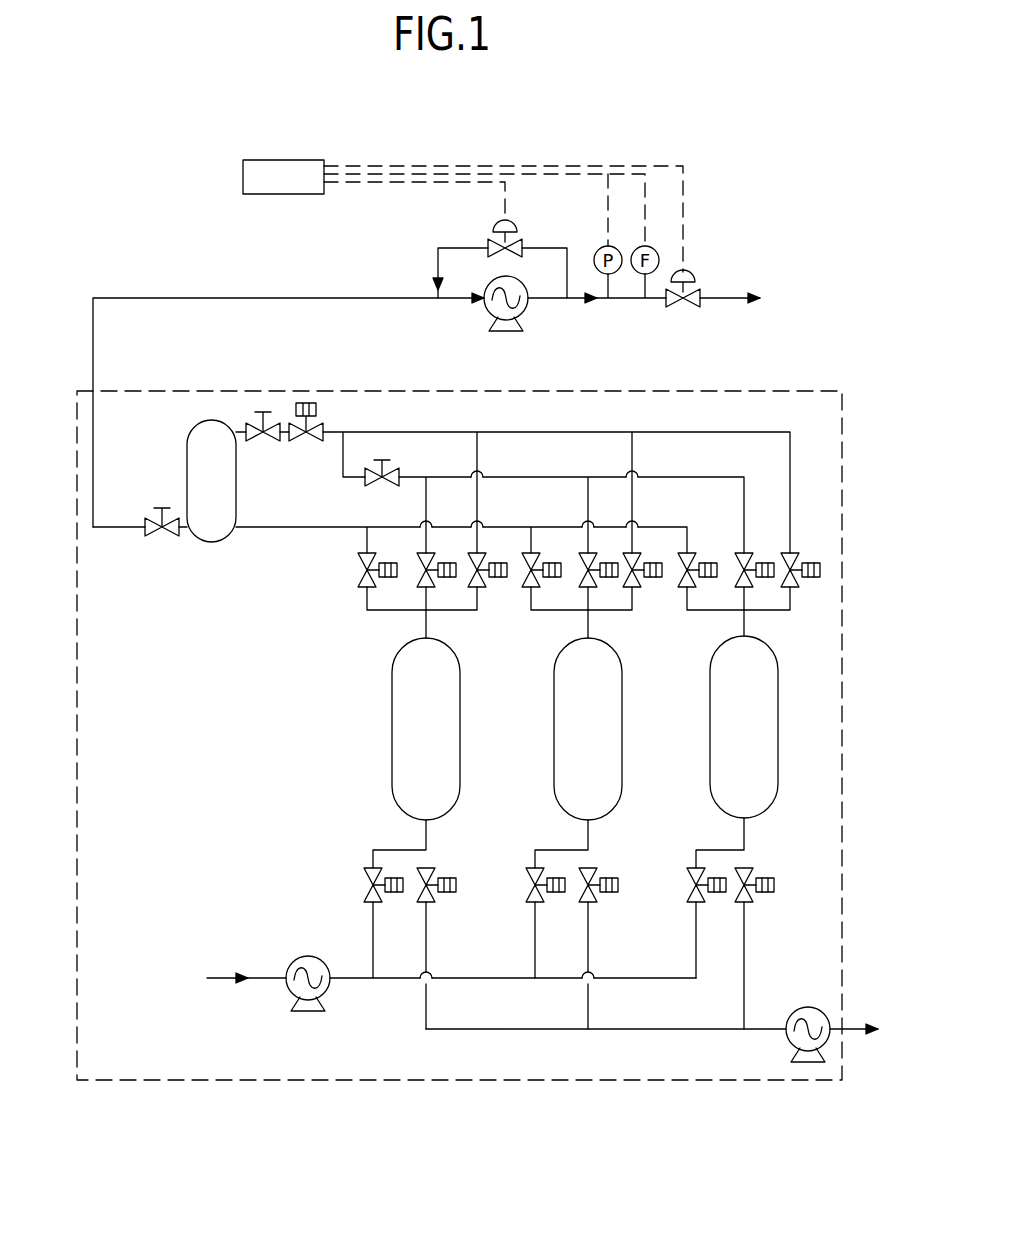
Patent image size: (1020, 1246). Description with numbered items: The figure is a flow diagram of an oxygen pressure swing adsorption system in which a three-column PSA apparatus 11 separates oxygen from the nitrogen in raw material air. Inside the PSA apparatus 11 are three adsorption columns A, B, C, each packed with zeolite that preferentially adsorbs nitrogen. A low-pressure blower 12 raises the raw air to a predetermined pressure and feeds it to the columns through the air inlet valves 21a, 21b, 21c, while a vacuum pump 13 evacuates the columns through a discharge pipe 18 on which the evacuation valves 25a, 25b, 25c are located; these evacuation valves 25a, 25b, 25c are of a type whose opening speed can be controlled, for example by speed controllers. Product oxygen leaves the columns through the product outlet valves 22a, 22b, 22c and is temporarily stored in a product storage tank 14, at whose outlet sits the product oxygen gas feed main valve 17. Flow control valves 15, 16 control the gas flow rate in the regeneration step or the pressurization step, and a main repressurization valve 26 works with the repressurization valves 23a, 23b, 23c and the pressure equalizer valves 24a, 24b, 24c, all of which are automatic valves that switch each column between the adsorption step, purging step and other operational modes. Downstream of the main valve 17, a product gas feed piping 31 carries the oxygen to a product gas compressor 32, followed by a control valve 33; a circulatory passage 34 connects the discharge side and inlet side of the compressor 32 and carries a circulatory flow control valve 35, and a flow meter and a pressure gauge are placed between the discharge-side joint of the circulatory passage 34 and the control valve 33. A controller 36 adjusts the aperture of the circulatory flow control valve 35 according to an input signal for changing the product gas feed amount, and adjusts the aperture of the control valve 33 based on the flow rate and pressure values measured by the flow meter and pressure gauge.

The PSA apparatus 11 is at (842, 695).
The low-pressure blower 12 is at (300, 960).
The vacuum pump 13 is at (808, 1007).
The product storage tank 14 is at (187, 462).
The flow control valve 15 is at (262, 442).
The flow control valve 16 is at (380, 487).
The product oxygen gas feed main valve 17 is at (162, 540).
The discharge pipe 18 is at (650, 1030).
The air inlet valve 21a is at (370, 890).
The air inlet valve 21b is at (530, 890).
The air inlet valve 21c is at (693, 890).
The product outlet valve 22a is at (358, 582).
The product outlet valve 22b is at (530, 590).
The product outlet valve 22c is at (688, 590).
The repressurization valve 23a is at (478, 590).
The repressurization valve 23b is at (633, 590).
The repressurization valve 23c is at (792, 590).
The pressure equalizer valve 24a is at (424, 583).
The pressure equalizer valve 24b is at (585, 555).
The pressure equalizer valve 24c is at (740, 555).
The evacuation valve 25a is at (430, 900).
The evacuation valve 25b is at (592, 902).
The evacuation valve 25c is at (750, 902).
The main repressurization valve 26 is at (310, 442).
The product gas feed piping 31 is at (335, 298).
The product gas compressor 32 is at (490, 316).
The control valve 33 is at (703, 292).
The circulatory passage 34 is at (462, 248).
The circulatory flow control valve 35 is at (520, 245).
The controller 36 is at (290, 160).
The adsorption column A is at (392, 730).
The adsorption column B is at (554, 730).
The adsorption column C is at (710, 730).